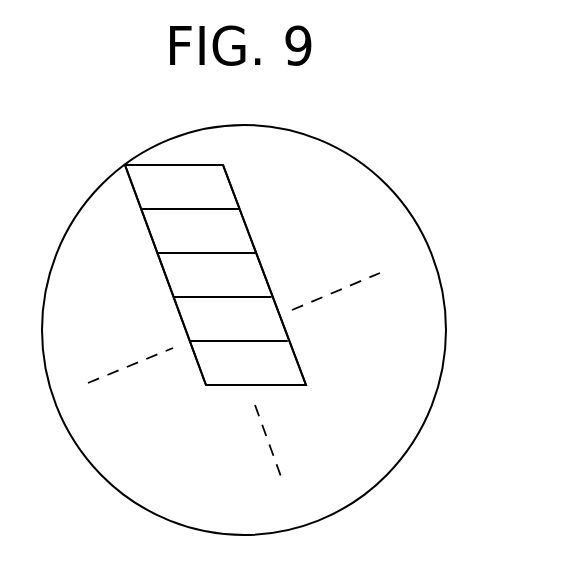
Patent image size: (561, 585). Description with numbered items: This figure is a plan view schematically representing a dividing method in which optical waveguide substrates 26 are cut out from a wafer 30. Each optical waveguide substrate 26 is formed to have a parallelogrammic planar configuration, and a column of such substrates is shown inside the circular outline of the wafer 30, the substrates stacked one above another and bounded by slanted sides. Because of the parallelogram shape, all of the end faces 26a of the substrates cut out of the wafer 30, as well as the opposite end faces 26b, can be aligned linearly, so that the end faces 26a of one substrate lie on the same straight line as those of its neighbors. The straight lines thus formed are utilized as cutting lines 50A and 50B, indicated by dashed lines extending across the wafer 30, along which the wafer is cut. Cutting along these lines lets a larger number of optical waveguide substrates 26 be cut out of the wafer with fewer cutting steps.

The optical waveguide substrate 26 is at (212, 188).
The end face 26a is at (134, 190).
The end face 26b is at (229, 180).
The wafer 30 is at (410, 214).
The cutting line 50A is at (167, 283).
The cutting line 50B is at (293, 345).